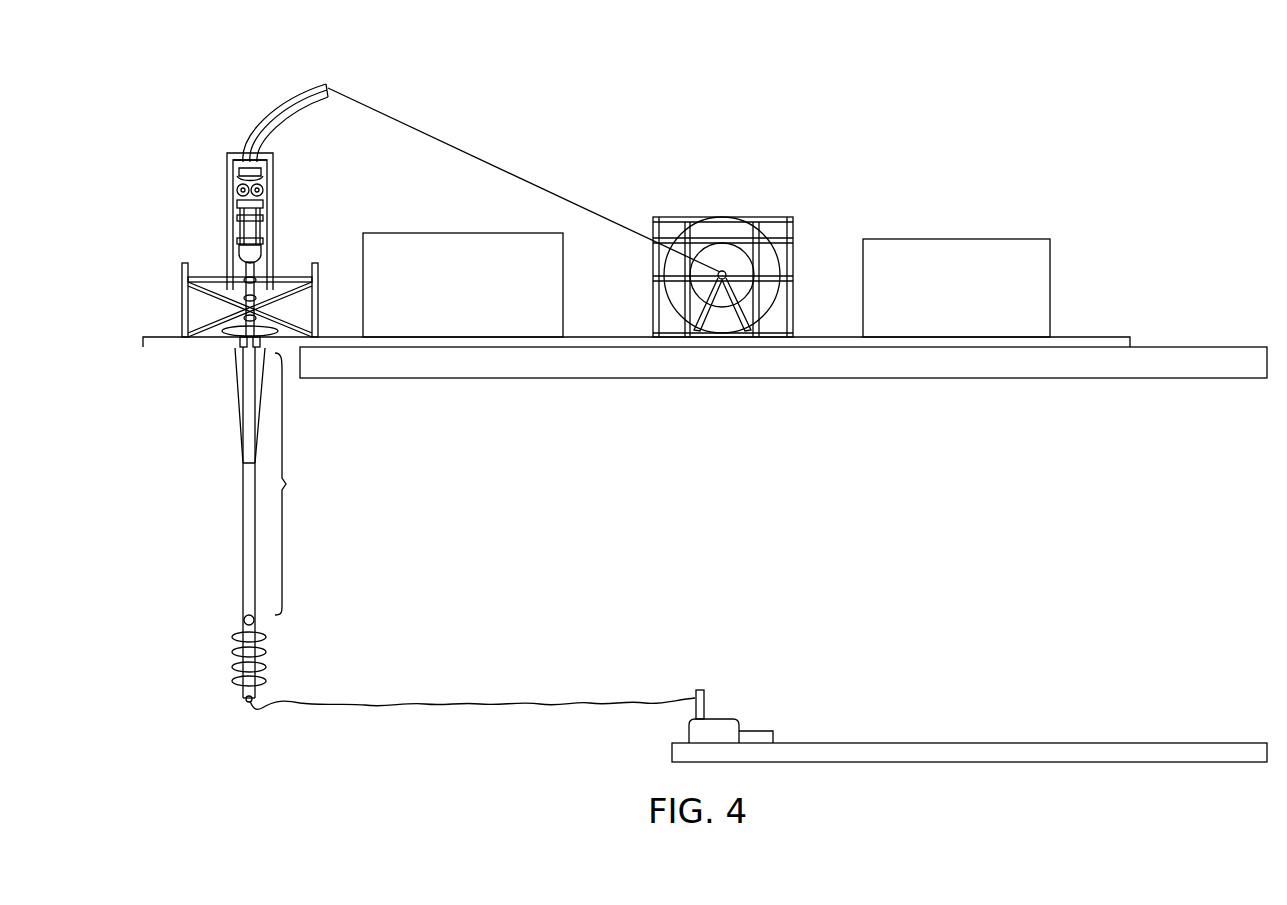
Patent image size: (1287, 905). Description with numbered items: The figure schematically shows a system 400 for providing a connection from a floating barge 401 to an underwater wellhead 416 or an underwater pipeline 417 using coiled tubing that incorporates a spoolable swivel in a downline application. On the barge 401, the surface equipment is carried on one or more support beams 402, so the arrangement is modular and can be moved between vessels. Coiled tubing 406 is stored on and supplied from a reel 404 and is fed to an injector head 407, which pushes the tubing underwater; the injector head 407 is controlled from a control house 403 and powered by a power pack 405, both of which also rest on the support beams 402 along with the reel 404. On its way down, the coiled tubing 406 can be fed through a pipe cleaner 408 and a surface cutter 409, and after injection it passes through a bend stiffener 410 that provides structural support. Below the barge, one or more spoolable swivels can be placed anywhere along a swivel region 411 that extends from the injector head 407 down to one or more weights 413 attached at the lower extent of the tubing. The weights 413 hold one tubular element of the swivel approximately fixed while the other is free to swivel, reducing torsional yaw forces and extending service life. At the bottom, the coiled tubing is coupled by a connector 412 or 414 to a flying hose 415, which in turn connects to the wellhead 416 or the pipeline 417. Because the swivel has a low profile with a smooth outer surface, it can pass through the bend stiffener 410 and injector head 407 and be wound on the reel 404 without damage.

The system 400 is at (1133, 112).
The barge 401 is at (1206, 365).
The support beams 402 is at (1110, 337).
The control house 403 is at (1018, 258).
The reel 404 is at (721, 224).
The power pack 405 is at (478, 252).
The coiled tubing 406 is at (375, 103).
The injector head 407 is at (243, 150).
The pipe cleaner 408 is at (246, 298).
The surface cutter 409 is at (202, 333).
The bend stiffener 410 is at (238, 365).
The swivel region 411 is at (288, 482).
The connector 412 is at (243, 622).
The weights 413 is at (264, 637).
The connector 414 is at (247, 703).
The flying hose 415 is at (400, 705).
The wellhead 416 is at (706, 703).
The pipeline 417 is at (975, 741).